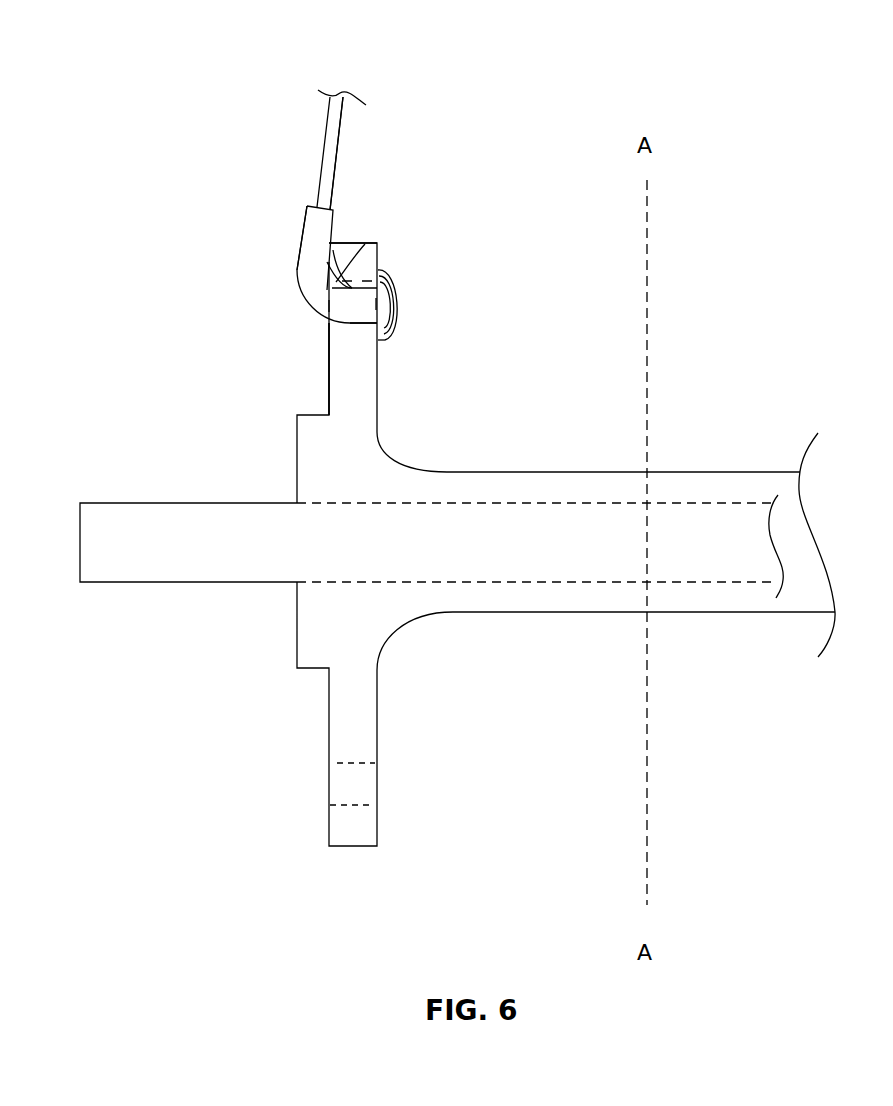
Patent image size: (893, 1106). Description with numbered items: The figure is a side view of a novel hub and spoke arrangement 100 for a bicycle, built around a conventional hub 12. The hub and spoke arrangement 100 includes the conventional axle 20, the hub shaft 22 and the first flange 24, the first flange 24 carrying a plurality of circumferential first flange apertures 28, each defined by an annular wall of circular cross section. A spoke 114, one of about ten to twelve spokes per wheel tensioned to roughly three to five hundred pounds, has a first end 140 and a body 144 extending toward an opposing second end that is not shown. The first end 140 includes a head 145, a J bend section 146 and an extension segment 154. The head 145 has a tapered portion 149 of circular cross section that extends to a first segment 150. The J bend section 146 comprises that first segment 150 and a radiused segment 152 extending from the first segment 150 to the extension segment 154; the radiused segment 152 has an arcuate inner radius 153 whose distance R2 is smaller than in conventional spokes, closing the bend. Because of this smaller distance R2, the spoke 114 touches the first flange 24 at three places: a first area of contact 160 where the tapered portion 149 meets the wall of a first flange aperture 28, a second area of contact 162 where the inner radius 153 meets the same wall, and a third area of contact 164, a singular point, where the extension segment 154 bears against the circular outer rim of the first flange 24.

The hub and spoke arrangement 100 is at (714, 48).
The hub 12 is at (722, 472).
The axle 20 is at (113, 503).
The hub shaft 22 is at (578, 612).
The first flange 24 is at (378, 370).
The first flange apertures 28 is at (330, 322).
The spoke 114 is at (327, 110).
The first end 140 is at (118, 242).
The body 144 is at (337, 150).
The head 145 is at (400, 298).
The J bend section 146 is at (307, 262).
The tapered portion 149 is at (385, 330).
The first segment 150 is at (326, 338).
The radiused segment 152 is at (305, 300).
The inner radius 153 is at (300, 262).
The extension segment 154 is at (303, 220).
The first area of contact 160 is at (380, 275).
The second area of contact 162 is at (378, 243).
The third area of contact 164 is at (338, 270).
The distance of inner radius R2 is at (346, 266).